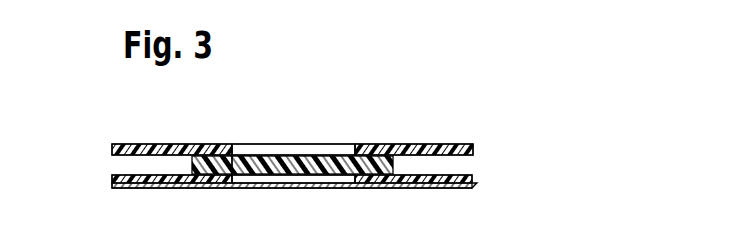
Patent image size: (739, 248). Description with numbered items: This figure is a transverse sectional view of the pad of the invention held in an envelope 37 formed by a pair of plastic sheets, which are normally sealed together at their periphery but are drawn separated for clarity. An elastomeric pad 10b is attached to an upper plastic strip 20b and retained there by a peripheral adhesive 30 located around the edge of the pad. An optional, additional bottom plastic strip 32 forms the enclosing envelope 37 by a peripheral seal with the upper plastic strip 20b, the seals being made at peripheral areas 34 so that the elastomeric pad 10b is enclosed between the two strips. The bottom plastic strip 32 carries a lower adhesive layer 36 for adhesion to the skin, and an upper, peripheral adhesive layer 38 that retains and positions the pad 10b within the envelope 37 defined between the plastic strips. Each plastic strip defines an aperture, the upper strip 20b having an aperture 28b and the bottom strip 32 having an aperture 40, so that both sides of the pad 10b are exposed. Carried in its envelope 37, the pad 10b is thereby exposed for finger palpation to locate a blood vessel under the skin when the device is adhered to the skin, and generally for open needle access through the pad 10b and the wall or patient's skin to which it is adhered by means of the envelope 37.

The envelope 37 is at (122, 144).
The plastic strip 20b is at (162, 143).
The peripheral adhesive 30 is at (210, 144).
The aperture 28b is at (317, 148).
The elastomeric pad 10b is at (365, 162).
The peripheral seal areas 34 is at (458, 165).
The plastic strip 32 is at (472, 180).
The aperture 40 is at (290, 180).
The upper peripheral adhesive layer 38 is at (378, 188).
The adhesive layer 36 is at (427, 190).